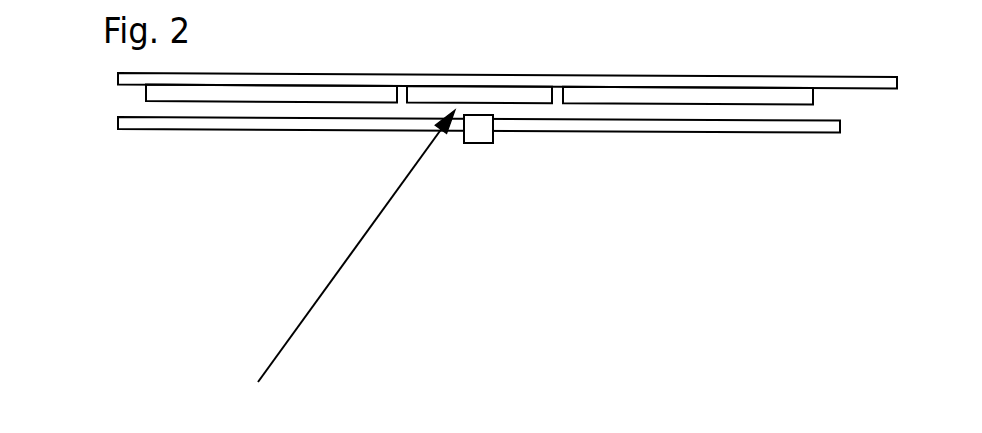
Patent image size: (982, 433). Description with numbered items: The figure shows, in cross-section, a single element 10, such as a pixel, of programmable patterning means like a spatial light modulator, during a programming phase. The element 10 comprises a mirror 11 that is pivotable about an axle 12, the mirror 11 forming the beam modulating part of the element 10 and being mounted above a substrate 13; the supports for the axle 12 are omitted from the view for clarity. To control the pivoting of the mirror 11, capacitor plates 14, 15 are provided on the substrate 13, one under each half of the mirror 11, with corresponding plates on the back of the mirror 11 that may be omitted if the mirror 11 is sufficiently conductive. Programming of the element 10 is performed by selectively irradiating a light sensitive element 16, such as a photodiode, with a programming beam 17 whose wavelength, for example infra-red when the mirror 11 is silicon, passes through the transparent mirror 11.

The element 10 is at (86, 122).
The mirror 11 is at (277, 129).
The axle 12 is at (480, 143).
The substrate 13 is at (402, 74).
The capacitor plate 14 is at (292, 74).
The capacitor plate 15 is at (692, 88).
The light sensitive element 16 is at (535, 83).
The programming beam 17 is at (328, 292).